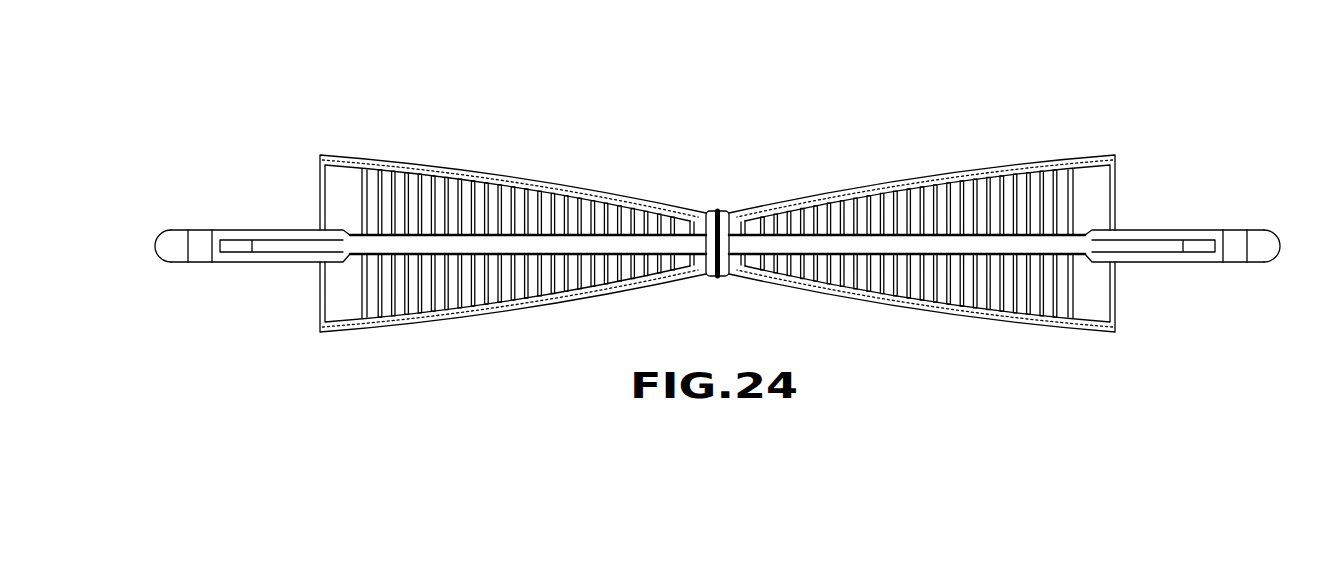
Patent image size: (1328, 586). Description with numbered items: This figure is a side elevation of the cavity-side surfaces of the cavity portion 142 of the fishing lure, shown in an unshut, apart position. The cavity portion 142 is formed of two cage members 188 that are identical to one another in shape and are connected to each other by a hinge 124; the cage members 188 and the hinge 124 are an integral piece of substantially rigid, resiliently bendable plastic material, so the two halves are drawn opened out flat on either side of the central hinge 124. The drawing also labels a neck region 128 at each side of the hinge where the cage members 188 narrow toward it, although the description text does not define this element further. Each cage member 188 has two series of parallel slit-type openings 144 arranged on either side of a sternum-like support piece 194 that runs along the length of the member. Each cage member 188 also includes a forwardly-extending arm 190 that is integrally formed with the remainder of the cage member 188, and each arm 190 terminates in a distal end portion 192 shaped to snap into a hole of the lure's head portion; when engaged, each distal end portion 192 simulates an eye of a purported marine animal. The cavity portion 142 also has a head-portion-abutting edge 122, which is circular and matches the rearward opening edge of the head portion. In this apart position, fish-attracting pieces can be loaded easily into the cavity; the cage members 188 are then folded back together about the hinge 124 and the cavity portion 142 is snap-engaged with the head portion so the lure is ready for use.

The cavity portion 142 is at (588, 155).
The head-portion-abutting edge 122 is at (317, 198).
The hinge 124 is at (710, 210).
The wing neck 128 is at (698, 216).
The slit-type openings 144 is at (1080, 375).
The cage member 188 is at (340, 287).
The forwardly-extending arm 190 is at (288, 243).
The distal end portion 192 is at (170, 242).
The sternum-like support piece 194 is at (877, 200).